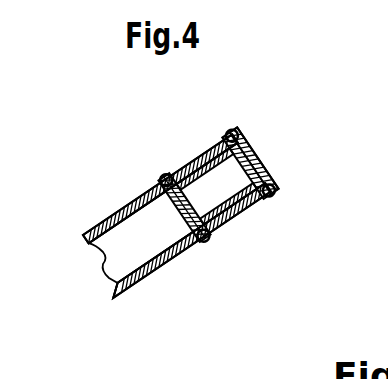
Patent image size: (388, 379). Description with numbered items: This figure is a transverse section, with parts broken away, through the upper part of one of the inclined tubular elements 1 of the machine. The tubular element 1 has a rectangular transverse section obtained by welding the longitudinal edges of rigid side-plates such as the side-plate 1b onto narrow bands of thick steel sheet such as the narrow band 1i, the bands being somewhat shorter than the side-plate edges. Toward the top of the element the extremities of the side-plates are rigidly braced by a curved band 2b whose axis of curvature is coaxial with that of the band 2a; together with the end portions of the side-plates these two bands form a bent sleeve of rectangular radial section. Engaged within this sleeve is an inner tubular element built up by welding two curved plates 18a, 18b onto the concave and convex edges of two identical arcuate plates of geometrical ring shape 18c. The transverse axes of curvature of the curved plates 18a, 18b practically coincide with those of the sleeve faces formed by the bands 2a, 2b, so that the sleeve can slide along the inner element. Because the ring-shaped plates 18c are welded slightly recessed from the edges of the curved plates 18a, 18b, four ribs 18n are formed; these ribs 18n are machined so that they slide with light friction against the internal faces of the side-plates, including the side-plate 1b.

The tubular element 1 is at (100, 264).
The side-plate 1b is at (103, 216).
The narrow band 1i is at (113, 298).
The band 2a is at (172, 228).
The curved band 2b is at (268, 160).
The curved plate 18a is at (167, 214).
The curved plate 18b is at (251, 143).
The arcuate plate of ring shape 18c is at (209, 156).
The rib 18n is at (229, 131).